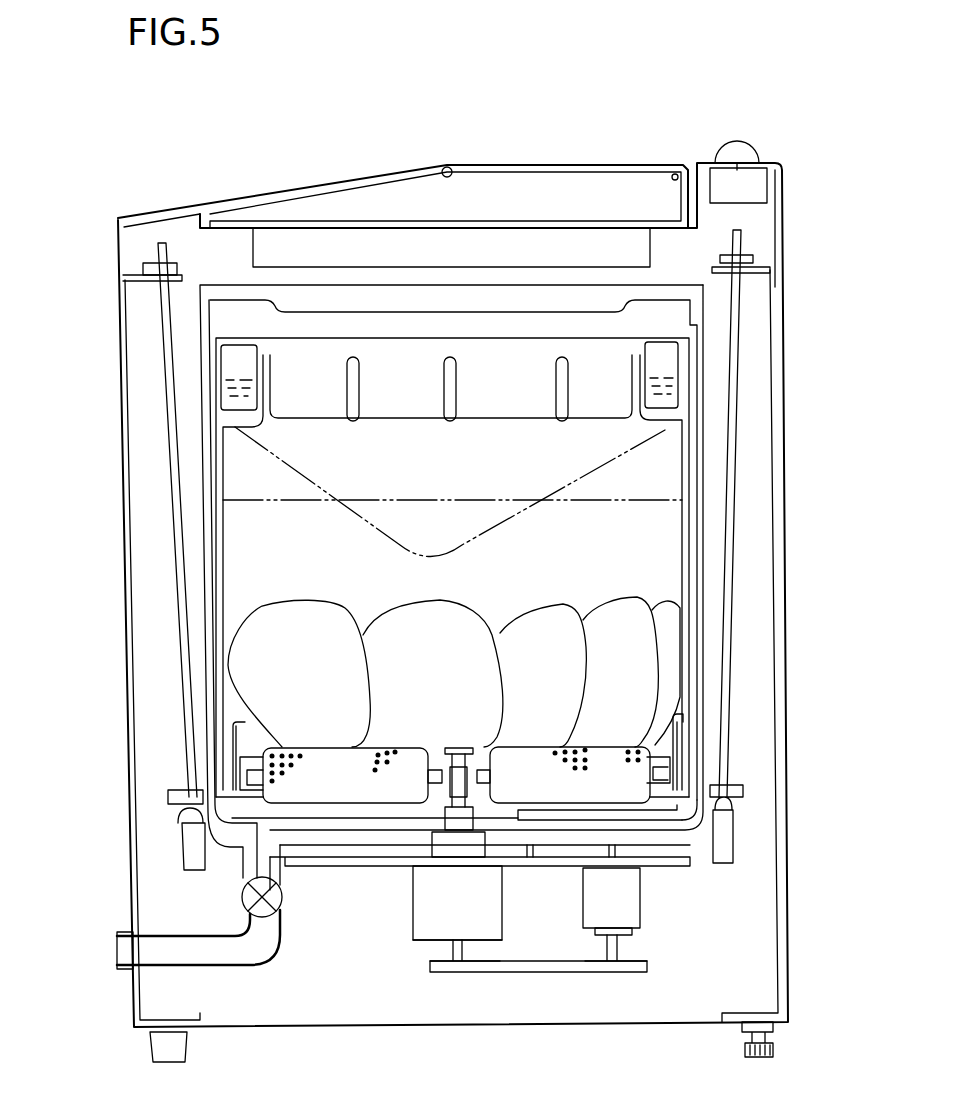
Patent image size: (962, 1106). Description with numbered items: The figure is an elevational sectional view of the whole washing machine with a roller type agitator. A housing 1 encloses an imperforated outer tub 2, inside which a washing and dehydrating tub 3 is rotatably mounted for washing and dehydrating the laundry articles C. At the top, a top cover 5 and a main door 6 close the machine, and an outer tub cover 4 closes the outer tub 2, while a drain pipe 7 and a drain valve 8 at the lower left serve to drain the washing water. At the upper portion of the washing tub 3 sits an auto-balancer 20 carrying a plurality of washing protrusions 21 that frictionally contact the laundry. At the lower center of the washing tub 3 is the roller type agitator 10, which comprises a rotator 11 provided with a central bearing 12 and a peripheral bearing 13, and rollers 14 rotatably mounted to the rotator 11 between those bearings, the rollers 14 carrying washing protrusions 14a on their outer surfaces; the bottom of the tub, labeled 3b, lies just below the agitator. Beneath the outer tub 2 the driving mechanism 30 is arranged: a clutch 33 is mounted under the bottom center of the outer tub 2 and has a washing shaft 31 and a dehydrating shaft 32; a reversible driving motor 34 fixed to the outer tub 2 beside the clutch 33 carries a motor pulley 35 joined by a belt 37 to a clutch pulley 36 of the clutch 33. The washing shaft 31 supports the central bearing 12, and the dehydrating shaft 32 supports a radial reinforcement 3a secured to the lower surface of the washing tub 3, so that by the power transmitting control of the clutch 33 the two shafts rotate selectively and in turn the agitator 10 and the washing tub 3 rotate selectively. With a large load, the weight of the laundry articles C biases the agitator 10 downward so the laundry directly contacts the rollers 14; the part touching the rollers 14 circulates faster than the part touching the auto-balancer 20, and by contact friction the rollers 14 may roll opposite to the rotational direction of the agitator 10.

The housing 1 is at (786, 812).
The outer tub 2 is at (704, 555).
The washing and dehydrating tub 3 is at (686, 505).
The radial reinforcement 3a is at (548, 828).
The tub bottom wall 3b is at (228, 708).
The outer tub cover 4 is at (703, 292).
The top cover 5 is at (782, 232).
The main door 6 is at (549, 165).
The drain pipe 7 is at (253, 967).
The drain valve 8 is at (243, 897).
The roller type agitator 10 is at (665, 739).
The rotator 11 is at (677, 750).
The central bearing 12 is at (435, 747).
The peripheral bearing 13 is at (248, 765).
The roller 14 is at (323, 762).
The washing protrusions 14a is at (600, 757).
The auto-balancer 20 is at (667, 395).
The washing protrusions 21 is at (353, 421).
The driving mechanism 30 is at (411, 925).
The washing shaft 31 is at (473, 747).
The dehydrating shaft 32 is at (470, 812).
The clutch 33 is at (417, 943).
The reversible driving motor 34 is at (620, 895).
The motor pulley 35 is at (608, 972).
The clutch pulley 36 is at (460, 972).
The belt 37 is at (540, 835).
The laundry articles C is at (232, 650).